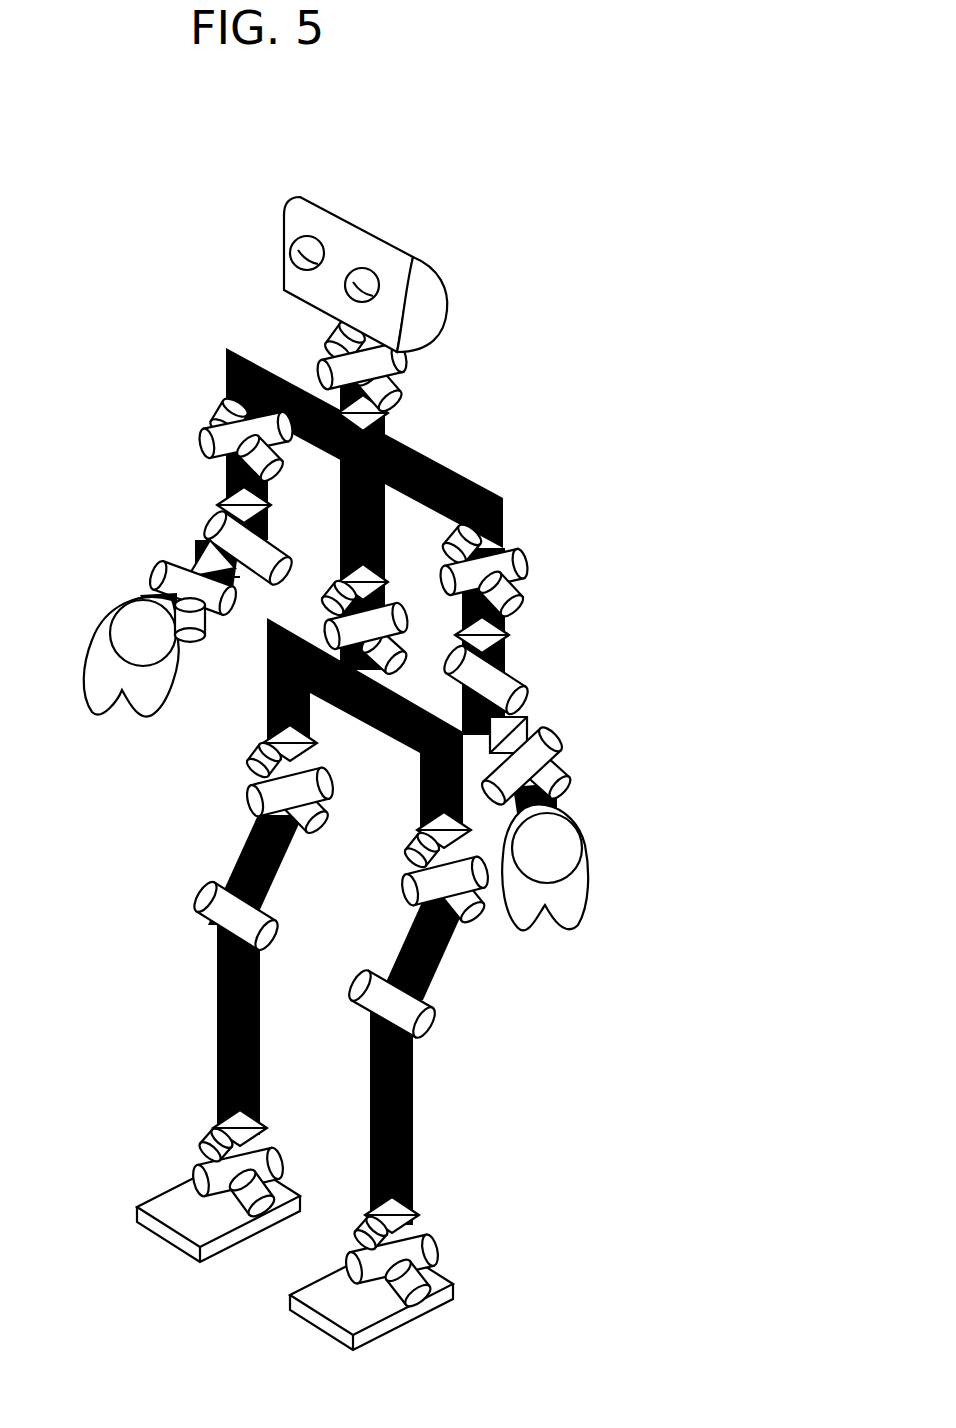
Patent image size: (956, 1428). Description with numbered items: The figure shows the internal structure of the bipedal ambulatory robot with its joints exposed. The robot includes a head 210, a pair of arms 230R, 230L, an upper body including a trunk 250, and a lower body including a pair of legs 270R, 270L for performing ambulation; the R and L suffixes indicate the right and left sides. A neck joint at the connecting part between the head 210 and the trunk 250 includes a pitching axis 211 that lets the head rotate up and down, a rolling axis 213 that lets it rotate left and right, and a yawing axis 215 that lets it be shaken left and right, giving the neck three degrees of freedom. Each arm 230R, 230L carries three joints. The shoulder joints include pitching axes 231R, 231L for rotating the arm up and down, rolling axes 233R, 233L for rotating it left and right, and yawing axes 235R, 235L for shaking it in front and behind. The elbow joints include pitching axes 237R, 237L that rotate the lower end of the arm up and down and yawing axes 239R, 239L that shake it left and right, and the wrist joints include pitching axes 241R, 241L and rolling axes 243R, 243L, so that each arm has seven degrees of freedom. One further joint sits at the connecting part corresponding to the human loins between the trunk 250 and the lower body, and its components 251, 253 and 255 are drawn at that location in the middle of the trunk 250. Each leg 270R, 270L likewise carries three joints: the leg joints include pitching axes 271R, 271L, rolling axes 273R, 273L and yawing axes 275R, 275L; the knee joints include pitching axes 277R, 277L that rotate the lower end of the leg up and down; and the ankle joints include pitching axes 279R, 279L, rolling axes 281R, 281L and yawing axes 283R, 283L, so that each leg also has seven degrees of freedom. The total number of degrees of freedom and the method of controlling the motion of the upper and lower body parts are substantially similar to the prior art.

The head 210 is at (300, 206).
The pitching axis of neck joint 211 is at (325, 337).
The rolling axis of neck joint 213 is at (229, 376).
The yawing axis of neck joint 215 is at (390, 413).
The right arm 230R is at (190, 556).
The pitching axis of right shoulder joint 231R is at (215, 410).
The rolling axis of right shoulder joint 233R is at (205, 445).
The yawing axis of right shoulder joint 235R is at (218, 506).
The pitching axis of right elbow joint 237R is at (208, 520).
The yawing axis of right elbow joint 239R is at (190, 560).
The pitching axis of right wrist joint 241R is at (152, 574).
The rolling axis of right wrist joint 243R is at (195, 642).
The left arm 230L is at (572, 725).
The pitching axis of left shoulder joint 231L is at (532, 565).
The rolling axis of left shoulder joint 233L is at (522, 606).
The yawing axis of left shoulder joint 235L is at (512, 637).
The pitching axis of left elbow joint 237L is at (525, 697).
The yawing axis of left elbow joint 239L is at (540, 737).
The pitching axis of left wrist joint 241L is at (568, 767).
The rolling axis of left wrist joint 243L is at (563, 790).
The trunk 250 is at (345, 632).
The waist actuators 251 is at (322, 598).
The pelvis link 253 is at (271, 647).
The waist joint 255 is at (340, 581).
The right leg 270R is at (193, 993).
The pitching axis of right leg joint 271R is at (255, 766).
The rolling axis of right leg joint 273R is at (243, 800).
The yawing axis of right leg joint 275R is at (263, 744).
The pitching axis of right knee joint 277R is at (200, 897).
The pitching axis of right ankle joint 279R is at (205, 1150).
The rolling axis of right ankle joint 281R is at (187, 1180).
The yawing axis of right ankle joint 283R is at (215, 1118).
The left leg 270L is at (421, 1085).
The pitching axis of left leg joint 271L is at (405, 856).
The rolling axis of left leg joint 273L is at (398, 890).
The yawing axis of left leg joint 275L is at (417, 832).
The pitching axis of left knee joint 277L is at (437, 1020).
The pitching axis of left ankle joint 279L is at (418, 1293).
The rolling axis of left ankle joint 281L is at (434, 1258).
The yawing axis of left ankle joint 283L is at (368, 1210).